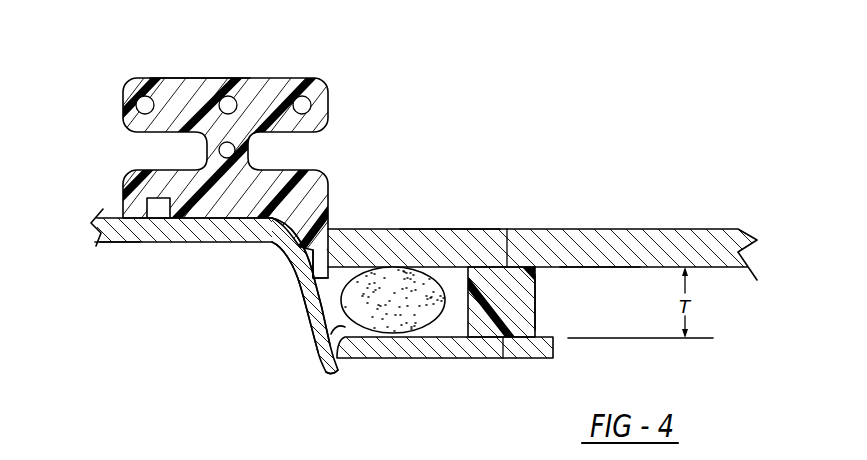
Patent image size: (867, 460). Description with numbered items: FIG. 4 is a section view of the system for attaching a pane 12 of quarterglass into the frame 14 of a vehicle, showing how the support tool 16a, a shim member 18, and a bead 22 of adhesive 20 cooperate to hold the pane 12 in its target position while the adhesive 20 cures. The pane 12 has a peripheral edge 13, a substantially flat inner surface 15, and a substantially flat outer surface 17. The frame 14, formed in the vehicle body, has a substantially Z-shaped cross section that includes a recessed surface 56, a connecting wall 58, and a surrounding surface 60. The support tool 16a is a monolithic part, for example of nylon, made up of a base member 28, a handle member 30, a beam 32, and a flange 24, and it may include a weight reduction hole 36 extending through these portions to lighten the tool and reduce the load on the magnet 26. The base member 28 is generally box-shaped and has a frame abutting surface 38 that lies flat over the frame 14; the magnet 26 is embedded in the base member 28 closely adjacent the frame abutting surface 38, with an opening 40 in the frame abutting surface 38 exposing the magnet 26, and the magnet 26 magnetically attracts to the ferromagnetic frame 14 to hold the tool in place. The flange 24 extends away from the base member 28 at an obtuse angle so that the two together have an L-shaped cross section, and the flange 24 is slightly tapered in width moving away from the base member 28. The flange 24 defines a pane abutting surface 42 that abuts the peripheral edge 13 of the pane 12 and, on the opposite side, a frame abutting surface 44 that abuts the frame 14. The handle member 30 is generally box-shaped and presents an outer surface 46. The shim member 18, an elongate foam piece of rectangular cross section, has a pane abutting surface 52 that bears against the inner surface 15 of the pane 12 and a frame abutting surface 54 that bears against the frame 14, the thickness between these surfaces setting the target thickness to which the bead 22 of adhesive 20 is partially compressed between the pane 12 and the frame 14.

The pane 12 is at (638, 225).
The peripheral edge 13 is at (318, 326).
The frame 14 is at (270, 317).
The inner surface 15 is at (590, 268).
The support tool 16a is at (121, 75).
The outer surface 17 is at (452, 229).
The shim member 18 is at (537, 292).
The adhesive 20 is at (337, 342).
The bead 22 is at (408, 308).
The flange 24 is at (325, 200).
The magnet 26 is at (158, 218).
The base member 28 is at (142, 177).
The handle member 30 is at (312, 80).
The beam 32 is at (293, 153).
The weight reduction hole 36 is at (229, 100).
The frame abutting surface 38 is at (200, 243).
The opening 40 is at (172, 220).
The pane abutting surface 42 is at (338, 246).
The frame abutting surface 44 is at (302, 250).
The outer surface 46 is at (198, 78).
The pane abutting surface 52 is at (510, 229).
The frame abutting surface 54 is at (503, 358).
The recessed surface 56 is at (387, 350).
The connecting wall 58 is at (304, 296).
The surrounding surface 60 is at (123, 243).